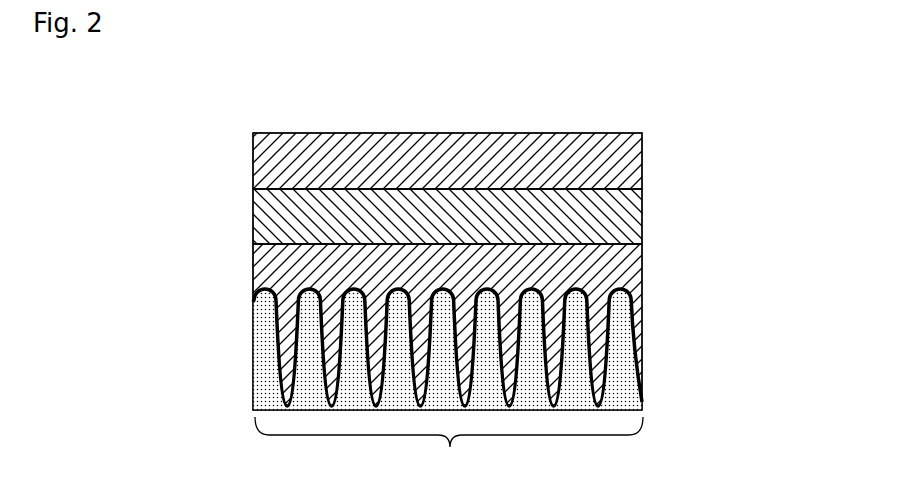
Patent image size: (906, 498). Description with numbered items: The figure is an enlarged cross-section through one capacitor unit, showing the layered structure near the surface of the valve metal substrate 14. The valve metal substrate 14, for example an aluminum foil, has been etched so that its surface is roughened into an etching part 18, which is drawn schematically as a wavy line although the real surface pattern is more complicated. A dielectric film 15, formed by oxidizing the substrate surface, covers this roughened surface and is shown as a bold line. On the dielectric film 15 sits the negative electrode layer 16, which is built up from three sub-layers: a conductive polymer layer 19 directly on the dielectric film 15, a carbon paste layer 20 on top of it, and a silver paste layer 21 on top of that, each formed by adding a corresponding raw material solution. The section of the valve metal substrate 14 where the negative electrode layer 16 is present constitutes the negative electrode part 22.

The valve metal substrate 14 is at (253, 340).
The dielectric film 15 is at (254, 289).
The negative electrode layer 16 is at (527, 271).
The etching part 18 is at (436, 326).
The conductive polymer layer 19 is at (496, 327).
The carbon paste layer 20 is at (633, 220).
The silver paste layer 21 is at (633, 160).
The negative electrode part 22 is at (449, 448).